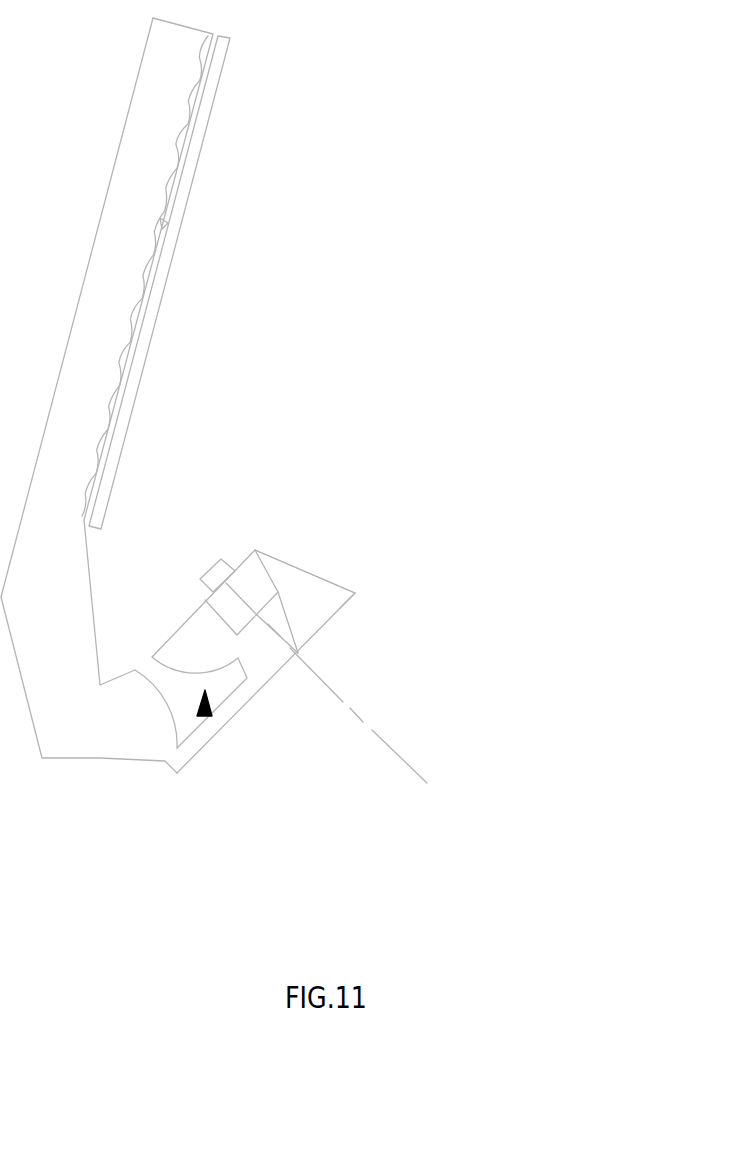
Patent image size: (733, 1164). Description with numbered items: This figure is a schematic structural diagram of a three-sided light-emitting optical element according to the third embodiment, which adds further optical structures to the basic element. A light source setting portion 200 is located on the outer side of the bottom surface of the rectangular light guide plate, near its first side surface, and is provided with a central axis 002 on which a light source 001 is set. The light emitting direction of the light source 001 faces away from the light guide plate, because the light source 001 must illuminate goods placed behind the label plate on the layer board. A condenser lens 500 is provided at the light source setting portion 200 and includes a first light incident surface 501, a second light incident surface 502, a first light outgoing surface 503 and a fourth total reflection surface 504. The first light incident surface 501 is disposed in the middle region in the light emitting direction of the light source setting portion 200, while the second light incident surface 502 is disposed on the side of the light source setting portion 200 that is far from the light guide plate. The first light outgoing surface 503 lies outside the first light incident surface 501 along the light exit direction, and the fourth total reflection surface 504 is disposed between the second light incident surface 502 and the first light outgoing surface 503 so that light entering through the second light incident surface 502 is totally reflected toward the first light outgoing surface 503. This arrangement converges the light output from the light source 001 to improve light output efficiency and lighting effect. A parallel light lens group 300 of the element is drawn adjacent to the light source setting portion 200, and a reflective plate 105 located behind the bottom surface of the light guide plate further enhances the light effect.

The reflective plate 105 is at (167, 261).
The light source 001 is at (222, 572).
The light source setting portion 200 is at (258, 549).
The fourth total reflection surface 504 is at (265, 575).
The second light incident surface 502 is at (345, 575).
The first light outgoing surface 503 is at (340, 610).
The condenser lens 500 is at (302, 613).
The first light incident surface 501 is at (307, 652).
The central axis 002 is at (410, 762).
The parallel light lens group 300 is at (204, 716).